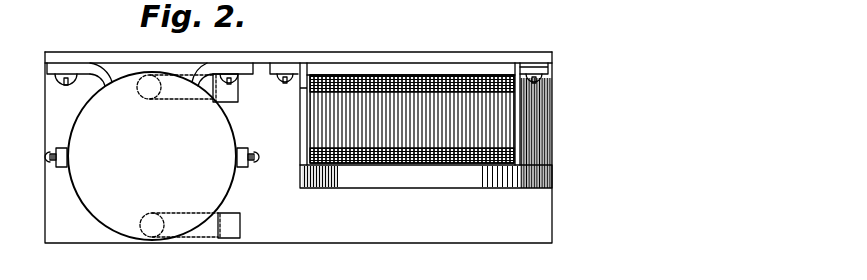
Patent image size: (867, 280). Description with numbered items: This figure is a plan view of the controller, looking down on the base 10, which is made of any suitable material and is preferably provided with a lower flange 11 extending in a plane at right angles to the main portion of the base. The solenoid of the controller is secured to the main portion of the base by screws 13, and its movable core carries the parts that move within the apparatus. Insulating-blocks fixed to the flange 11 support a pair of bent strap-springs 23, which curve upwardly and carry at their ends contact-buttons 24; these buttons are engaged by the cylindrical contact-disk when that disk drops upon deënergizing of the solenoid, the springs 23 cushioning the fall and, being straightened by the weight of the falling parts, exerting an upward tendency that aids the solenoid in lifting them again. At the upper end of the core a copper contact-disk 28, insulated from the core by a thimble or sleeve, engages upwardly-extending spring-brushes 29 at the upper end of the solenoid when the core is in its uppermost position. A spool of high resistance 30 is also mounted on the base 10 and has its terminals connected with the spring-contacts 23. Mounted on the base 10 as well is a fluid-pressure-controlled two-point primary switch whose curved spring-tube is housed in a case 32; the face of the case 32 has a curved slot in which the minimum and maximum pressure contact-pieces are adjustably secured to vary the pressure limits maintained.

The base 10 is at (369, 57).
The lower flange 11 is at (327, 243).
The screws 13 is at (55, 78).
The bent strap-springs 23 is at (229, 100).
The contact-buttons 24 is at (148, 100).
The copper contact-disk 28 is at (93, 206).
The spring-brushes 29 is at (62, 167).
The spool of high resistance 30 is at (427, 166).
The case 32 is at (363, 190).